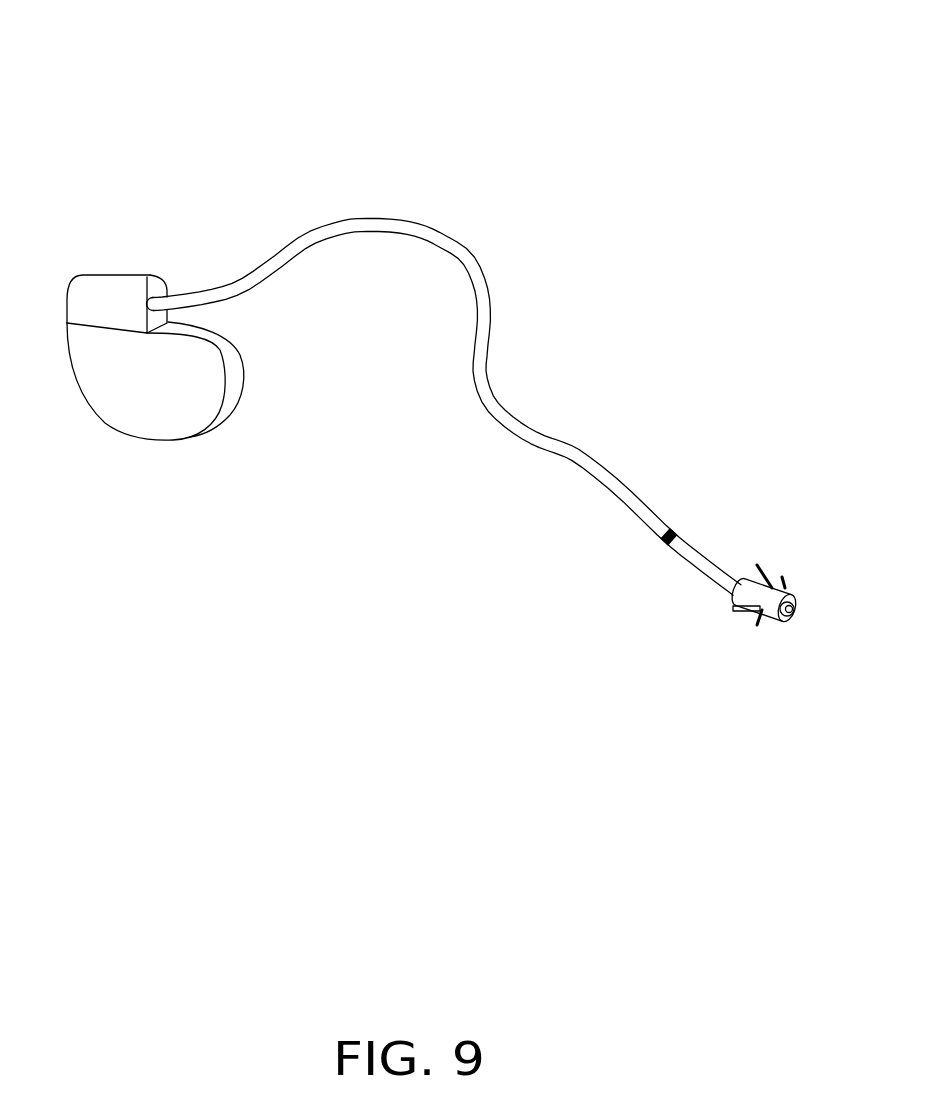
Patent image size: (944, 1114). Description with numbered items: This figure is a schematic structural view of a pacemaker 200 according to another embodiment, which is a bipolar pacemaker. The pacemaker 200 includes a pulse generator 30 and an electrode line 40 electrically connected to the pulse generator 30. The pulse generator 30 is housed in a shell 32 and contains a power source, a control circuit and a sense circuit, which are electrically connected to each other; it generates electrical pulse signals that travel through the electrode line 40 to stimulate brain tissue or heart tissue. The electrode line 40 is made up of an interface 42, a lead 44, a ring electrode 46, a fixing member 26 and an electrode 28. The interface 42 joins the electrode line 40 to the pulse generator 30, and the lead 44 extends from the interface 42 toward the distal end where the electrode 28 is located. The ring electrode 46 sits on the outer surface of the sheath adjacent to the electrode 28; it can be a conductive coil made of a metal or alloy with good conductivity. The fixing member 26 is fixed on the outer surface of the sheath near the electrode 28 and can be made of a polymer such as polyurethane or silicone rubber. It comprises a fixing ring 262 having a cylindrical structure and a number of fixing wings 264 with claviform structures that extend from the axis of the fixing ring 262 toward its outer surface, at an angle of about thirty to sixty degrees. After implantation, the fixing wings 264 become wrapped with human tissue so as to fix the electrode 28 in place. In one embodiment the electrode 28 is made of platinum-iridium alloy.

The pacemaker 200 is at (430, 58).
The pulse generator 30 is at (264, 386).
The interface 42 is at (107, 293).
The shell 32 is at (163, 420).
The electrode line 40 is at (473, 421).
The lead 44 is at (372, 227).
The ring electrode 46 is at (658, 537).
The fixing member 26 is at (847, 503).
The fixing ring 262 is at (743, 573).
The fixing wings 264 is at (767, 577).
The electrode 28 is at (798, 613).